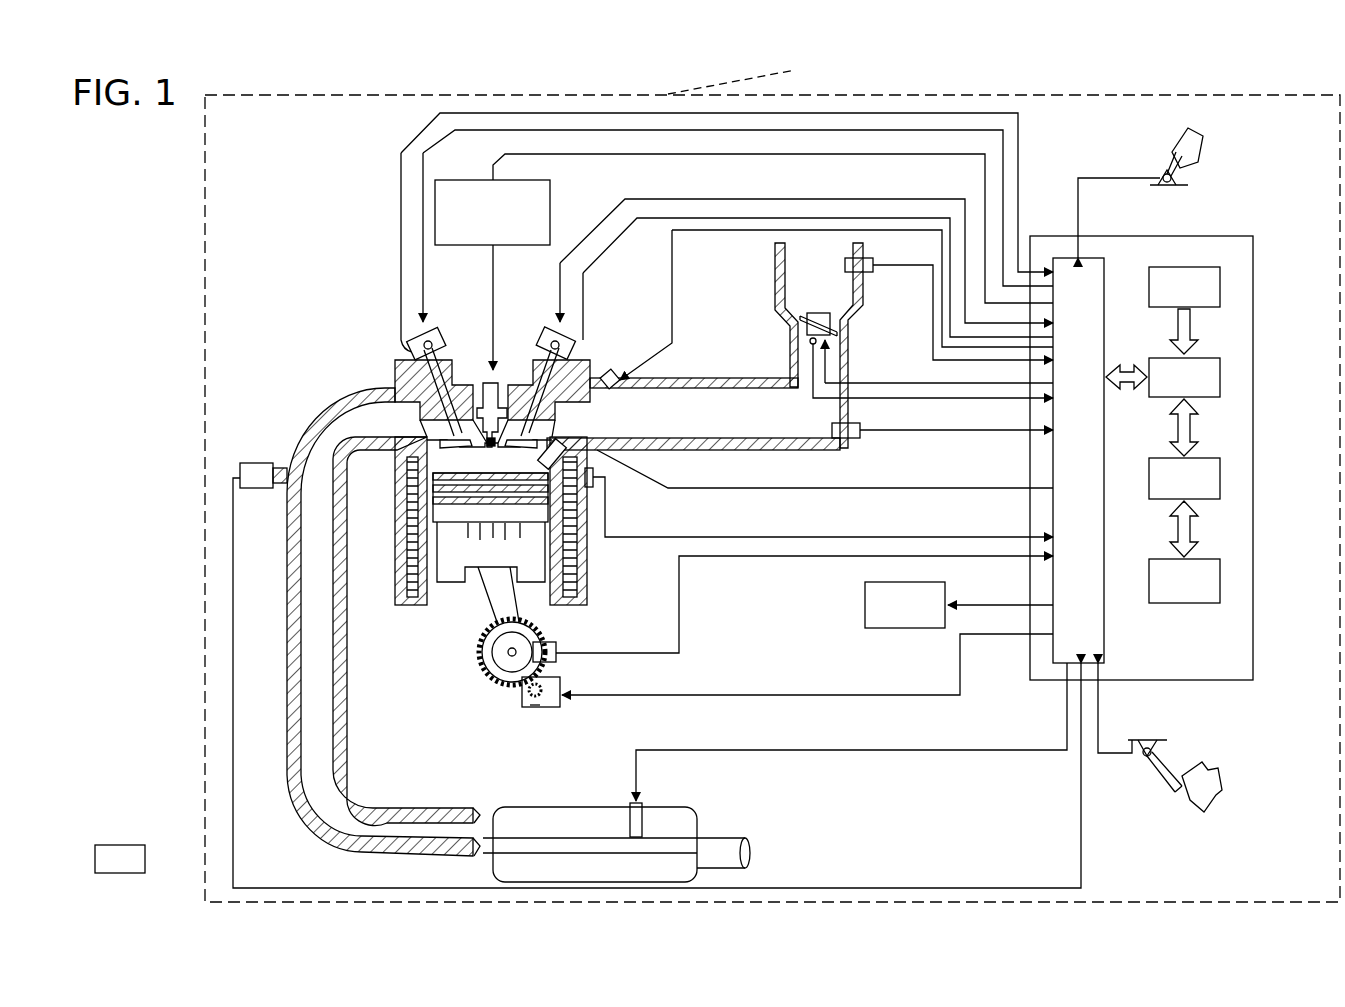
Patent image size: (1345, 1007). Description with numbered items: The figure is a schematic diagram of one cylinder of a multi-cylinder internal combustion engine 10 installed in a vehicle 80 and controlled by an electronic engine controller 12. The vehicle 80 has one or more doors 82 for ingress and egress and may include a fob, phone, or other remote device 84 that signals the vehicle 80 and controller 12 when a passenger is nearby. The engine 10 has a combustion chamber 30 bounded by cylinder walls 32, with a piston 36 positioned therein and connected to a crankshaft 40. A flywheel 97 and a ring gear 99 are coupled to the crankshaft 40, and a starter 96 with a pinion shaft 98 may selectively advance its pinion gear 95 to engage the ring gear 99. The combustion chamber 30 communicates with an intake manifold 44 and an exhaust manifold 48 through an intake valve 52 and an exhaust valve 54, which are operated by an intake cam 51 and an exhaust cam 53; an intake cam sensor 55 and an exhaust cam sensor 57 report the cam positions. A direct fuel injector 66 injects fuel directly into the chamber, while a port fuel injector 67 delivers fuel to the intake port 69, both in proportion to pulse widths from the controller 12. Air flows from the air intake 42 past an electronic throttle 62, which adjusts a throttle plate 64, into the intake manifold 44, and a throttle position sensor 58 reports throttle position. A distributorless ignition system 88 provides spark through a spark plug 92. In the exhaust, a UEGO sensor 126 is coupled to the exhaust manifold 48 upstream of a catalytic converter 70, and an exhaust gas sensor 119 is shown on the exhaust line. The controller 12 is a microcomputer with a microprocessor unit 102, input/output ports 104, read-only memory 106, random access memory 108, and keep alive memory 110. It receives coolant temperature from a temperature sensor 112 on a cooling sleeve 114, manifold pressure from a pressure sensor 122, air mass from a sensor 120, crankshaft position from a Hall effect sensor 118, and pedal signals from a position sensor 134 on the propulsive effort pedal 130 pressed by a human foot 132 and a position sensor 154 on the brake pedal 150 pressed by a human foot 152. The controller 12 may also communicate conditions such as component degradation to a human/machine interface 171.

The internal combustion engine 10 is at (333, 315).
The electronic engine controller 12 is at (1255, 236).
The combustion chamber 30 is at (490, 455).
The cylinder walls 32 is at (437, 590).
The piston 36 is at (473, 583).
The crankshaft 40 is at (493, 682).
The air intake 42 is at (828, 292).
The intake manifold 44 is at (767, 422).
The exhaust manifold 48 is at (375, 432).
The intake cam 51 is at (552, 330).
The intake valve 52 is at (548, 432).
The exhaust cam 53 is at (430, 330).
The exhaust valve 54 is at (412, 402).
The intake cam sensor 55 is at (578, 342).
The exhaust cam sensor 57 is at (412, 350).
The throttle position sensor 58 is at (808, 345).
The electronic throttle 62 is at (838, 324).
The throttle plate 64 is at (797, 320).
The direct fuel injector 66 is at (580, 458).
The port fuel injector 67 is at (826, 309).
The intake port 69 is at (572, 432).
The catalytic converter 70 is at (503, 806).
The vehicle 80 is at (205, 800).
The door 82 is at (690, 93).
The remote device 84 is at (122, 845).
The distributorless ignition system 88 is at (447, 180).
The spark plug 92 is at (498, 370).
The pinion gear 95 is at (548, 710).
The starter 96 is at (553, 707).
The flywheel 97 is at (487, 650).
The pinion shaft 98 is at (533, 710).
The ring gear 99 is at (510, 692).
The microprocessor unit 102 is at (1222, 380).
The input/output ports 104 is at (1105, 260).
The read-only memory 106 is at (1222, 282).
The random access memory 108 is at (1222, 480).
The keep alive memory 110 is at (1222, 580).
The temperature sensor 112 is at (602, 490).
The cooling sleeve 114 is at (587, 560).
The Hall effect sensor 118 is at (557, 642).
The exhaust gas sensor 119 is at (645, 802).
The air mass sensor 120 is at (873, 272).
The pressure sensor 122 is at (860, 440).
The Universal Exhaust Gas Oxygen sensor 126 is at (235, 463).
The propulsive effort pedal 130 is at (1193, 186).
The human foot 132 is at (1205, 140).
The position sensor 134 is at (1188, 182).
The brake pedal 150 is at (1160, 744).
The human foot 152 is at (1200, 763).
The position sensor 154 is at (1132, 745).
The human/machine interface 171 is at (959, 605).